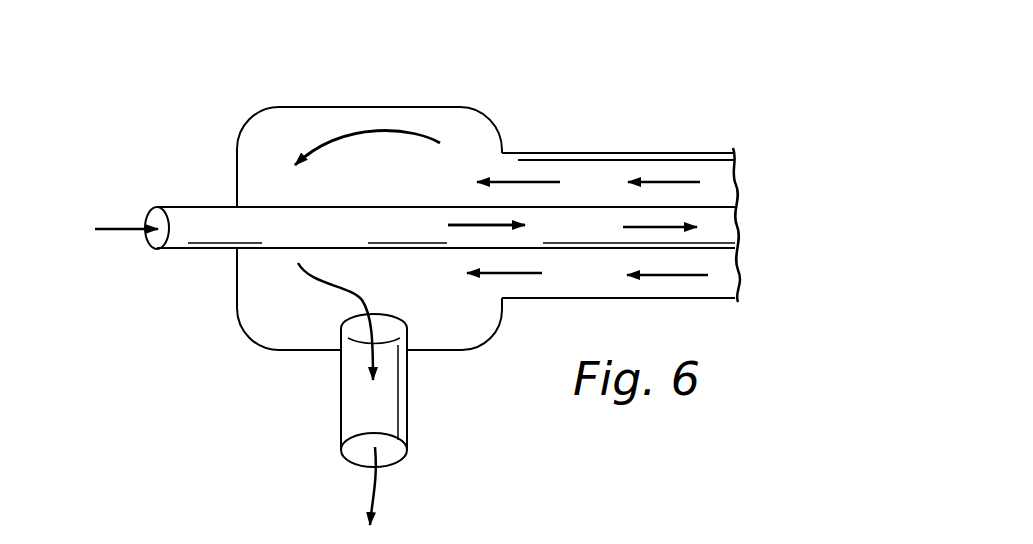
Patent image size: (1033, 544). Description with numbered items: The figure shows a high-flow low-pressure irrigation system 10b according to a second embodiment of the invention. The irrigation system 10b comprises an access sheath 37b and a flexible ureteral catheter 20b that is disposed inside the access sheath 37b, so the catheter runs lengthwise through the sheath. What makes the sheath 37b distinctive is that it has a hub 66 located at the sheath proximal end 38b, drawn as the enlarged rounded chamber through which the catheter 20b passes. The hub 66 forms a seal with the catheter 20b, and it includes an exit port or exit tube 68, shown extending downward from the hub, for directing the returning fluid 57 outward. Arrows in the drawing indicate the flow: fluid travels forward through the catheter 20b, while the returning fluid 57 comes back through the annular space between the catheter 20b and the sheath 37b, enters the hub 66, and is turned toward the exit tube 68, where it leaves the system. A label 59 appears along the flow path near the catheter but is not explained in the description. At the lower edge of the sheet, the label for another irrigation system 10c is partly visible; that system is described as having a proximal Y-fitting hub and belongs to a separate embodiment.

The high-flow low-pressure irrigation system 10b is at (455, 215).
The flexible ureteral catheter 20b is at (193, 250).
The access sheath 37b is at (658, 153).
The sheath proximal end 38b is at (228, 193).
The returning fluid 57 is at (352, 130).
The flow path 59 is at (455, 230).
The hub 66 is at (253, 335).
The exit tube 68 is at (408, 420).
The irrigation system 10c is at (191, 533).